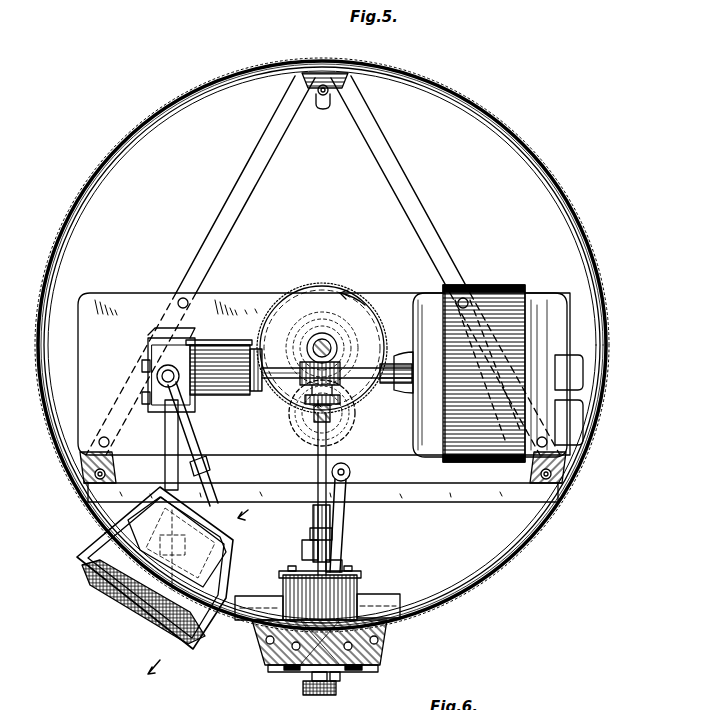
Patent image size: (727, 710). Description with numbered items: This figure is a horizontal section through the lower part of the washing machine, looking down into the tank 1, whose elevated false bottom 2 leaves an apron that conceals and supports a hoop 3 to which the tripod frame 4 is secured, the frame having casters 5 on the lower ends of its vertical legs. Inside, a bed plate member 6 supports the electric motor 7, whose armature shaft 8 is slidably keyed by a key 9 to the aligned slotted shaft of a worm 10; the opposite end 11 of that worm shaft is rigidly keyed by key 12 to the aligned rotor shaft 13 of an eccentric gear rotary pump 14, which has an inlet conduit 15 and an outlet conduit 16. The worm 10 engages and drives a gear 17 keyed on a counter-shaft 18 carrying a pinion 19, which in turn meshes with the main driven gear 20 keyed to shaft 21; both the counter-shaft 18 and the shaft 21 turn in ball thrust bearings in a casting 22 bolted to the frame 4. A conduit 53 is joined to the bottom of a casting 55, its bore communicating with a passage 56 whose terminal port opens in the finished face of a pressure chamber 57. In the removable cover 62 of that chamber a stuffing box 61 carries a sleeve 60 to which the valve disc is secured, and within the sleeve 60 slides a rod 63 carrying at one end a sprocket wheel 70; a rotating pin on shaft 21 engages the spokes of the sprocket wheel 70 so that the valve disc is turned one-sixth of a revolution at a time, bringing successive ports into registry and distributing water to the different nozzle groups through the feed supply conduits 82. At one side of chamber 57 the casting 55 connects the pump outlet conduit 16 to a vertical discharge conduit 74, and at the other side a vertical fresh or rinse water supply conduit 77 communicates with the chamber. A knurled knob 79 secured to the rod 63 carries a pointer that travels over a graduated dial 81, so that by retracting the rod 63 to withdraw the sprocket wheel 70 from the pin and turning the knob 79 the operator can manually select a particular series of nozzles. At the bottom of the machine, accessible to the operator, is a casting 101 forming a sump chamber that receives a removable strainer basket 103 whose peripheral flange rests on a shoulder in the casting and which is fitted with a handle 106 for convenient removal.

The tank 1 is at (528, 163).
The bottom 2 is at (554, 192).
The hoop 3 is at (557, 212).
The rim edge i is at (571, 205).
The tripod frame 4 is at (250, 173).
The casters 5 is at (325, 100).
The bed plate member 6 is at (204, 598).
The electric motor 7 is at (498, 373).
The armature shaft 8 is at (374, 380).
The key 9 is at (381, 370).
The worm 10 is at (340, 362).
The opposite end of worm shaft 11 is at (292, 400).
The key 12 is at (292, 364).
The rotor shaft 13 is at (278, 384).
The eccentric gear rotary pump 14 is at (216, 362).
The inlet conduit 15 is at (166, 424).
The outlet conduit 16 is at (192, 438).
The gear 17 is at (310, 440).
The counter-shaft 18 is at (340, 426).
The pinion 19 is at (290, 430).
The main driven gear 20 is at (353, 297).
The shaft 21 is at (320, 336).
The casting 22 is at (243, 300).
The conduit 53 is at (352, 475).
The casting 55 is at (382, 598).
The channel or passage 56 is at (342, 675).
The pressure chamber 57 is at (366, 590).
The sleeve 60 is at (312, 532).
The stuffing box 61 is at (302, 558).
The removable cover 62 is at (344, 583).
The rod 63 is at (318, 492).
The sprocket wheel 70 is at (345, 403).
The vertical discharge conduit 74 is at (266, 640).
The fresh or rinse water supply conduit 77 is at (396, 652).
The knurled knob 79 is at (319, 695).
The graduated dial 81 is at (306, 678).
The feed supply conduits 82 is at (292, 668).
The casting 101 is at (88, 570).
The strainer basket 103 is at (152, 620).
The handle 106 is at (132, 614).